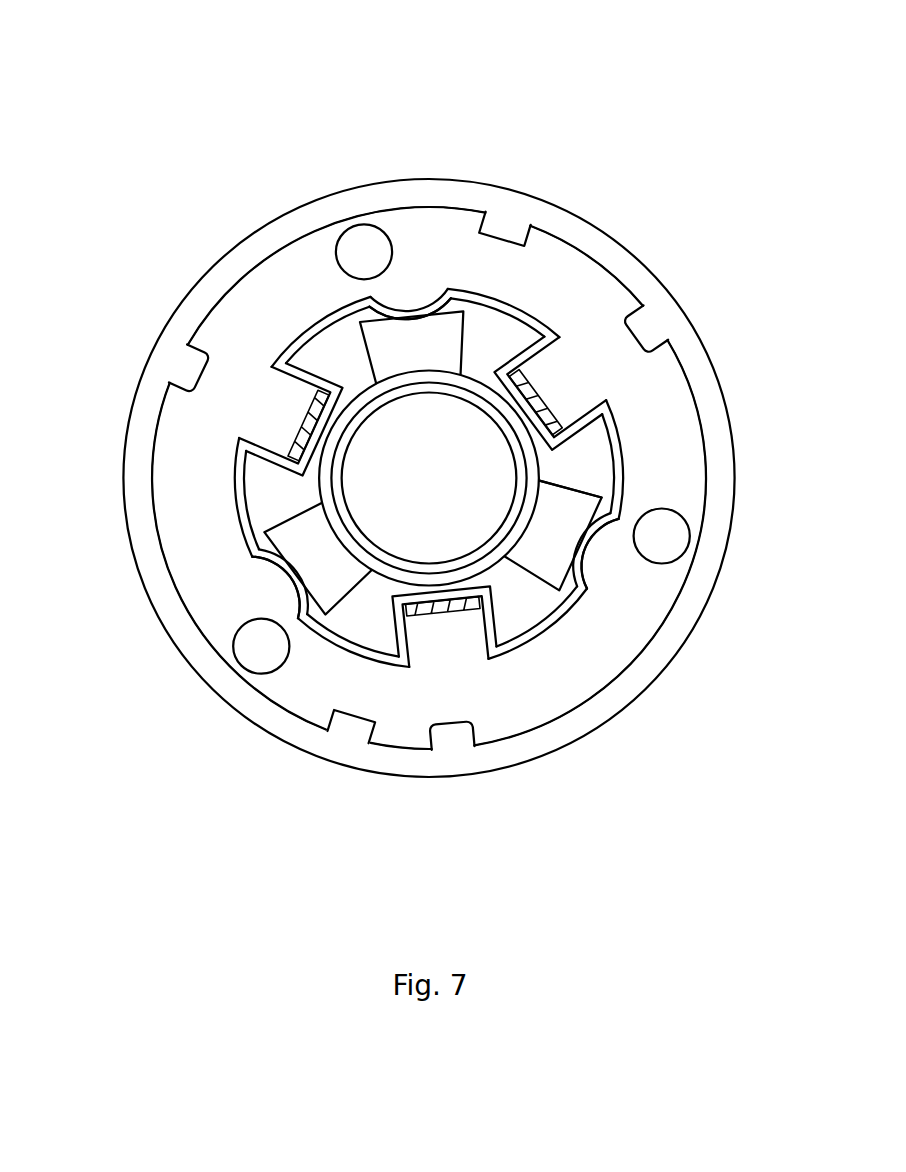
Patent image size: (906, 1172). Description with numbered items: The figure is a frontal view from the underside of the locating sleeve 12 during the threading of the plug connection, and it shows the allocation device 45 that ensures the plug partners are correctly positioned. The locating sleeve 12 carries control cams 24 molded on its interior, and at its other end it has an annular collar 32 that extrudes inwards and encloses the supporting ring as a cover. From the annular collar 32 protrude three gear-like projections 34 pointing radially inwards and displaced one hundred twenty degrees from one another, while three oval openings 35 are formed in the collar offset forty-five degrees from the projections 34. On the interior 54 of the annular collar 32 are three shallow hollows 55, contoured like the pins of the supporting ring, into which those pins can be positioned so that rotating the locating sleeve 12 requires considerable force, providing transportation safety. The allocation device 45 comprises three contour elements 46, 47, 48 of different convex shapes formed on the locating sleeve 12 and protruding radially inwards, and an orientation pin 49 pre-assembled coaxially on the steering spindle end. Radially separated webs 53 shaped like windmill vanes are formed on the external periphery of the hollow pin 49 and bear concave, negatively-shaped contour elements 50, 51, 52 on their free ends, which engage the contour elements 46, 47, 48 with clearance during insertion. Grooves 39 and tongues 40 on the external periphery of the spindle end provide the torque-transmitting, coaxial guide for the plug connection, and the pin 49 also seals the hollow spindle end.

The locating sleeve 12 is at (607, 232).
The control cam 24 is at (506, 228).
The annular collar 32 is at (283, 290).
The gear-like projection 34 is at (555, 391).
The oval opening 35 is at (362, 243).
The groove 39 is at (546, 345).
The tongue 40 is at (472, 346).
The allocation device 45 is at (204, 150).
The contour element 46 is at (410, 318).
The contour element 47 is at (593, 552).
The contour element 48 is at (284, 602).
The orientation pin 49 is at (570, 490).
The contour element 50 is at (416, 312).
The contour element 51 is at (586, 552).
The contour element 52 is at (286, 585).
The web 53 is at (402, 363).
The interior of the annular collar 54 is at (238, 323).
The shallow hollow 55 is at (186, 365).